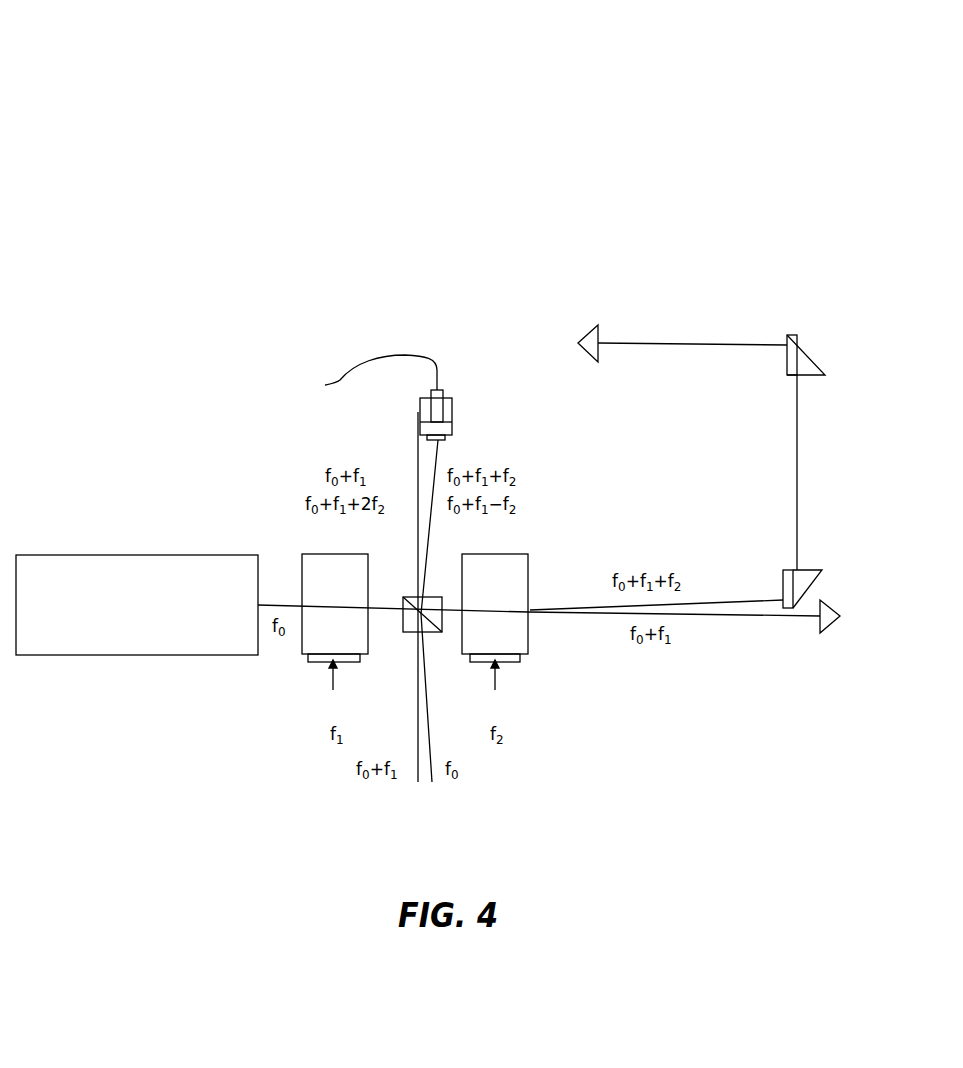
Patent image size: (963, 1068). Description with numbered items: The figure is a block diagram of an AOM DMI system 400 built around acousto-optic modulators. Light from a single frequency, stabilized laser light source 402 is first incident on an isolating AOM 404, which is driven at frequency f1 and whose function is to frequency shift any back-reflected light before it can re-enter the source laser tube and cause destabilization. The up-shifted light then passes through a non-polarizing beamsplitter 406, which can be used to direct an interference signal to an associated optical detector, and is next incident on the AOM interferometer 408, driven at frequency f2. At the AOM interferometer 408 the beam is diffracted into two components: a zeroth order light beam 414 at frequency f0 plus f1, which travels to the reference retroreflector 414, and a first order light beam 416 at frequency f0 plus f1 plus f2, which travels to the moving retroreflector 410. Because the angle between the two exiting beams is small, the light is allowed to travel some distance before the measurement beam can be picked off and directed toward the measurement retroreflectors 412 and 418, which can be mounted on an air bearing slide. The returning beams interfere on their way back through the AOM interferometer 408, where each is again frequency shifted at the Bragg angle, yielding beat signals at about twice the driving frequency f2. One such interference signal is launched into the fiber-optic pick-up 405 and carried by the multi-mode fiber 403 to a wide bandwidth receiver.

The AOM DMI system 400 is at (56, 66).
The single frequency stabilized laser light source 402 is at (84, 556).
The multi-mode fiber 403 is at (359, 378).
The isolating AOM 404 is at (300, 560).
The fiber-optic pick-up 405 is at (453, 426).
The non-polarizing beamsplitter 406 is at (414, 598).
The AOM interferometer 408 is at (530, 560).
The moving retroreflector 410 is at (783, 580).
The measurement retroreflector 412 is at (787, 358).
The reference retroreflector 414 is at (755, 620).
The first order light beam 416 is at (750, 600).
The measurement retroreflector 418 is at (580, 335).